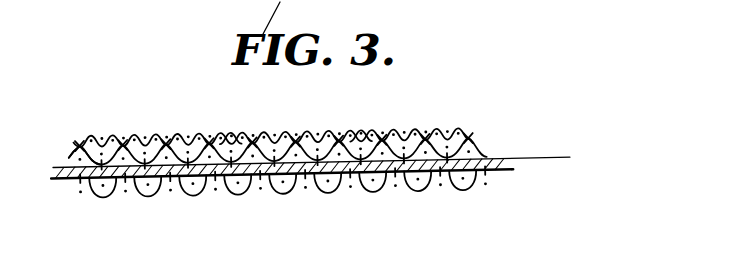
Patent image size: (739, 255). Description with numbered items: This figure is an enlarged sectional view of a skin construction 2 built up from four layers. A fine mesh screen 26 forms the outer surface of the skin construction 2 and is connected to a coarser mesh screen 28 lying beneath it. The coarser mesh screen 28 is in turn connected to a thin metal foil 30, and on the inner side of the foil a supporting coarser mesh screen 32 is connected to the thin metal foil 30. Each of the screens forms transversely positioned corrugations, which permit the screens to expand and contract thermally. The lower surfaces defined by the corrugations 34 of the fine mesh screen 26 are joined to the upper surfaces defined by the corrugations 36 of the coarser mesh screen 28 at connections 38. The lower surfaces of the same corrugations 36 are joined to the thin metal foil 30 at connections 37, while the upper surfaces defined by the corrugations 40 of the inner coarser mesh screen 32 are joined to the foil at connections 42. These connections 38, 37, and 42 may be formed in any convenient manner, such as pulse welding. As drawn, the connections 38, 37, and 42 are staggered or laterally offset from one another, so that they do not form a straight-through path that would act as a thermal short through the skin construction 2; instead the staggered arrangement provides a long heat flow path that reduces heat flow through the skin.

The skin construction 2 is at (531, 132).
The fine mesh screen 26 is at (196, 124).
The coarser mesh screen 28 is at (497, 138).
The thin metal foil 30 is at (327, 162).
The coarser mesh screen 32 is at (463, 192).
The corrugations 34 is at (363, 136).
The corrugations 36 is at (99, 141).
The connections 37 is at (234, 140).
The connections 38 is at (425, 138).
The corrugations 40 is at (255, 177).
The connections 42 is at (172, 176).